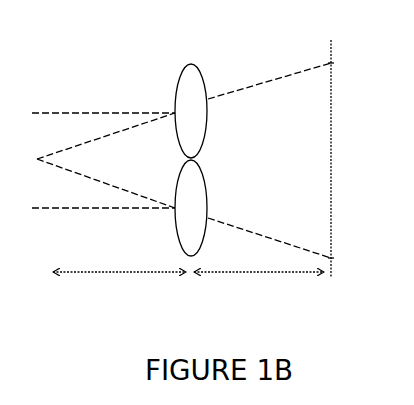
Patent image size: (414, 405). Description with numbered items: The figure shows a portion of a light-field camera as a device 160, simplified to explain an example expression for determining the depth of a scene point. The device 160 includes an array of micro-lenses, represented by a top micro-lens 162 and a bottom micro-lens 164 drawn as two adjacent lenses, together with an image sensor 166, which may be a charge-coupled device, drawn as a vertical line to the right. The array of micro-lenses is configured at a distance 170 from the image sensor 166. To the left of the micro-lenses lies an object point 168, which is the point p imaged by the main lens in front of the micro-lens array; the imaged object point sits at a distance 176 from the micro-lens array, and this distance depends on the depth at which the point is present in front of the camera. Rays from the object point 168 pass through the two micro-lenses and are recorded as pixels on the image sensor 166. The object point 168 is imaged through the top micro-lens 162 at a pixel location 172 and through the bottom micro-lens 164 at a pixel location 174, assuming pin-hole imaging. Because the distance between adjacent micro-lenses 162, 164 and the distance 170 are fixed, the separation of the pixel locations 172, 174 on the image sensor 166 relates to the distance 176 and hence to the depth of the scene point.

The device 160 is at (256, 315).
The micro-lens 162 is at (203, 84).
The micro-lens 164 is at (203, 184).
The image sensor 166 is at (331, 154).
The object point 168 is at (37, 158).
The distance between micro-lens array and image sensor 170 is at (255, 272).
The pixel location 172 is at (331, 63).
The pixel location 174 is at (331, 258).
The distance between imaged object point and micro-lens array 176 is at (100, 272).